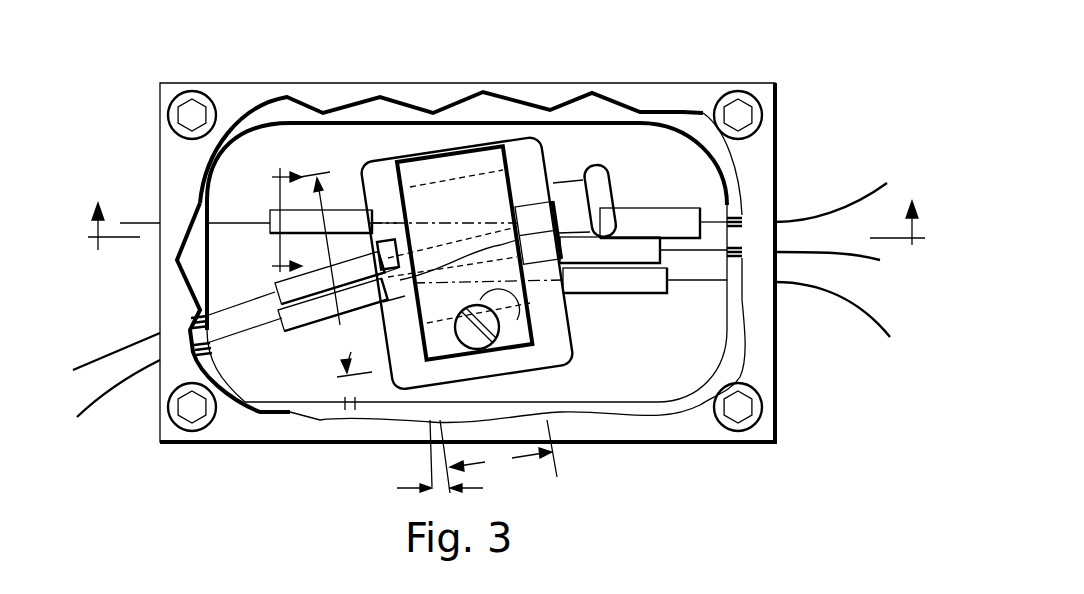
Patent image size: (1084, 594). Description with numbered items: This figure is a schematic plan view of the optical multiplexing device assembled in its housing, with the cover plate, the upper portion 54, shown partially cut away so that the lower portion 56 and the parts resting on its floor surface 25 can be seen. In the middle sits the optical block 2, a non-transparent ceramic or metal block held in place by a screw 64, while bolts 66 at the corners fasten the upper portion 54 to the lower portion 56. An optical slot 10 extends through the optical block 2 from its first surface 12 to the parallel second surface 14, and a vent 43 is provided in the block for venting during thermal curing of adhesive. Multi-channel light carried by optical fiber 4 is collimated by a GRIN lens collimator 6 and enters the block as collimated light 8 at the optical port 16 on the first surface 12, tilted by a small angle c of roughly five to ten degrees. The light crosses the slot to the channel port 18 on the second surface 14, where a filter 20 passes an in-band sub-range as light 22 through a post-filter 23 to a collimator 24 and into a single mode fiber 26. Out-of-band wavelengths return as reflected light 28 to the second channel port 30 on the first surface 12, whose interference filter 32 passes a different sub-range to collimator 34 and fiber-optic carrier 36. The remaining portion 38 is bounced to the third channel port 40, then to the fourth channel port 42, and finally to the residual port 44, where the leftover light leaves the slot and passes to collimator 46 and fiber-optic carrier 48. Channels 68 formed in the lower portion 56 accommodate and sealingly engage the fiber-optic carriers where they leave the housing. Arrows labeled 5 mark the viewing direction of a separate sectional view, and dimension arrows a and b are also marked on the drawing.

The optical block 2 is at (420, 155).
The optical fiber 4 is at (140, 222).
The section view direction 5 is at (506, 240).
The GRIN lens collimator 6 is at (272, 210).
The collimated light 8 is at (372, 222).
The optical slot 10 is at (517, 170).
The first surface 12 is at (380, 172).
The second surface 14 is at (507, 155).
The optical port 16 is at (400, 215).
The channel port 18 is at (513, 223).
The filter 20 is at (527, 213).
The light 22 is at (563, 220).
The post-filter 23 is at (562, 193).
The collimator 24 is at (660, 215).
The floor surface 25 is at (633, 179).
The single mode fiber 26 is at (795, 220).
The reflected light 28 is at (453, 245).
The second channel port 30 is at (413, 257).
The interference filter 32 is at (377, 247).
The collimator 34 is at (270, 287).
The fiber-optic carrier 36 is at (120, 352).
The remaining portion of collimated light 38 is at (497, 250).
The third channel port 40 is at (483, 257).
The fourth channel port 42 is at (430, 287).
The vent 43 is at (345, 402).
The residual port 44 is at (527, 283).
The collimator 46 is at (640, 280).
The fiber-optic carrier 48 is at (815, 290).
The upper portion 54 is at (692, 430).
The lower portion 56 is at (588, 389).
The screw 64 is at (500, 310).
The bolts 66 is at (738, 112).
The channels 68 is at (207, 348).
The dimension a is at (493, 456).
The dimension b is at (336, 274).
The tilt angle c is at (440, 488).